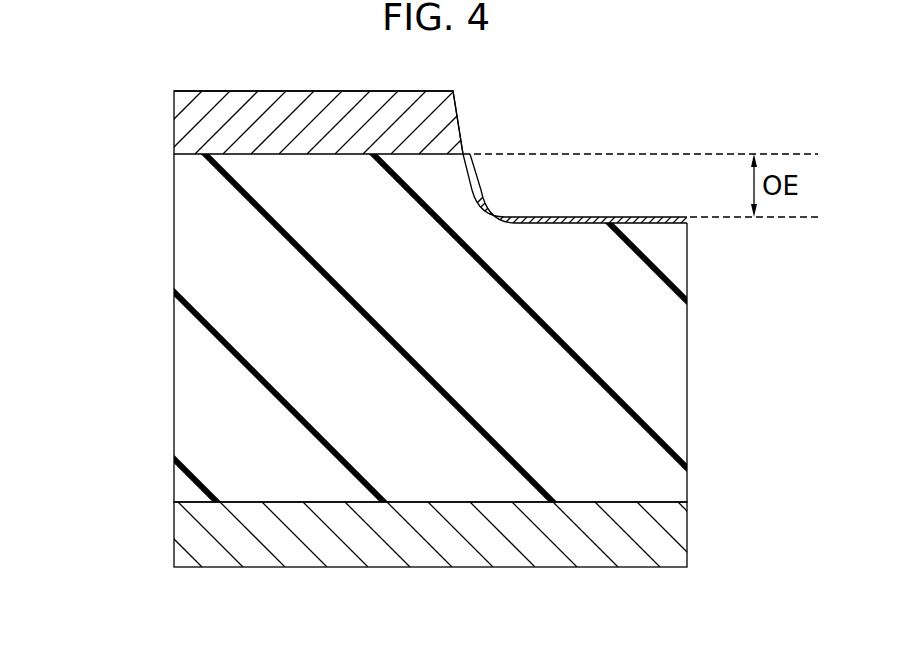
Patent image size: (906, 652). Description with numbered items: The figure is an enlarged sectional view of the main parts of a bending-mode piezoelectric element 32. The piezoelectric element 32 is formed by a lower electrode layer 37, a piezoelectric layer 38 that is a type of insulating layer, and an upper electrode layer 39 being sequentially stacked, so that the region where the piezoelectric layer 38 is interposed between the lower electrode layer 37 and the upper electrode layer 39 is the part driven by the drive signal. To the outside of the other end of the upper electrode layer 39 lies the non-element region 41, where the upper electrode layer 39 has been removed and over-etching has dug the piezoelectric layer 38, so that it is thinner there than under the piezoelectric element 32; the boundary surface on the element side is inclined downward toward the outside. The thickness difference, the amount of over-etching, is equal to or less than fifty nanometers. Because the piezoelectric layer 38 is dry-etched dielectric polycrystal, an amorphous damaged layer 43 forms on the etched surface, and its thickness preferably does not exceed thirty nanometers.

The piezoelectric element 32 is at (56, 568).
The lower electrode layer 37 is at (182, 540).
The piezoelectric layer 38 is at (190, 318).
The upper electrode layer 39 is at (188, 126).
The non-element region 41 is at (601, 78).
The damaged layer 43 is at (652, 216).